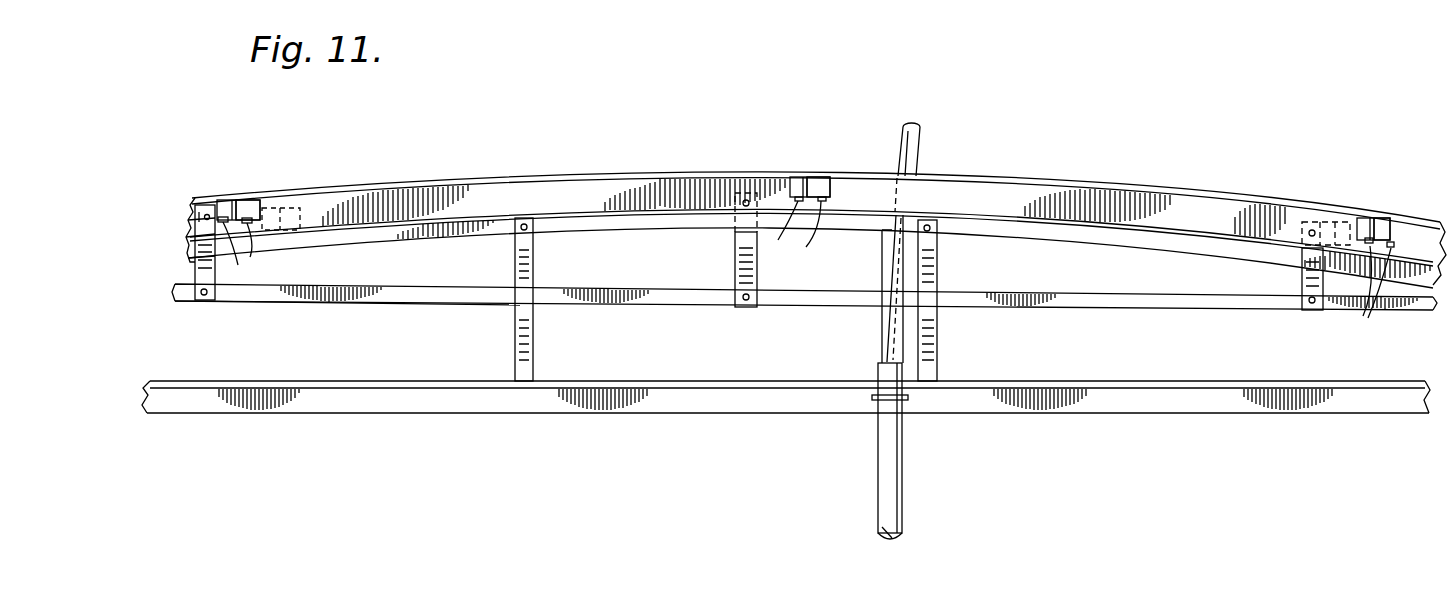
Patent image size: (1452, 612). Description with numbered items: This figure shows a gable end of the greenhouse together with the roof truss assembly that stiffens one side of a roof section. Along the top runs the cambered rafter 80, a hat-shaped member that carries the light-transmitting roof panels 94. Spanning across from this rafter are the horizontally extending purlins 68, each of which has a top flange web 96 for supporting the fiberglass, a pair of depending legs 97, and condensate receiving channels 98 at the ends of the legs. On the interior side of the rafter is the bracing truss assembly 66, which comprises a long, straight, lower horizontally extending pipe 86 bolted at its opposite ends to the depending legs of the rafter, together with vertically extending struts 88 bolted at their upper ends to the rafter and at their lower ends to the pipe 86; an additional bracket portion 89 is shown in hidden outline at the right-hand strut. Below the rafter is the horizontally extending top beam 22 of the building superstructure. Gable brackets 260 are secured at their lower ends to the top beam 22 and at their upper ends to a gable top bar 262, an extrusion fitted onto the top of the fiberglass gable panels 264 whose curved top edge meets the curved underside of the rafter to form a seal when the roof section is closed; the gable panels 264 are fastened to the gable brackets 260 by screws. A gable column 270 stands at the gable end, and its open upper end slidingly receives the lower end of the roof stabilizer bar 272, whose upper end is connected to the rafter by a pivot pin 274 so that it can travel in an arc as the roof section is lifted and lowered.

The horizontally extending beam 22 is at (716, 414).
The truss assembly 66 is at (984, 262).
The purlin 68 is at (257, 193).
The rafter 80 is at (464, 197).
The lower horizontally extending straight pipe 86 is at (635, 302).
The vertically extending strut 88 is at (196, 275).
The hidden bracket portion 89 is at (1312, 230).
The roof panel 94 is at (377, 185).
The top flange web 96 is at (226, 214).
The depending leg 97 is at (222, 204).
The condensate receiving channel 98 is at (807, 275).
The gable bracket 260 is at (517, 347).
The gable top bar 262 is at (432, 232).
The gable panel 264 is at (357, 352).
The gable column 270 is at (893, 492).
The roof stabilizer bar 272 is at (882, 308).
The pivot pin 274 is at (887, 212).